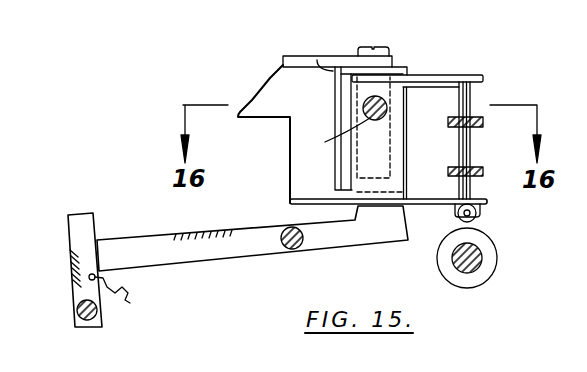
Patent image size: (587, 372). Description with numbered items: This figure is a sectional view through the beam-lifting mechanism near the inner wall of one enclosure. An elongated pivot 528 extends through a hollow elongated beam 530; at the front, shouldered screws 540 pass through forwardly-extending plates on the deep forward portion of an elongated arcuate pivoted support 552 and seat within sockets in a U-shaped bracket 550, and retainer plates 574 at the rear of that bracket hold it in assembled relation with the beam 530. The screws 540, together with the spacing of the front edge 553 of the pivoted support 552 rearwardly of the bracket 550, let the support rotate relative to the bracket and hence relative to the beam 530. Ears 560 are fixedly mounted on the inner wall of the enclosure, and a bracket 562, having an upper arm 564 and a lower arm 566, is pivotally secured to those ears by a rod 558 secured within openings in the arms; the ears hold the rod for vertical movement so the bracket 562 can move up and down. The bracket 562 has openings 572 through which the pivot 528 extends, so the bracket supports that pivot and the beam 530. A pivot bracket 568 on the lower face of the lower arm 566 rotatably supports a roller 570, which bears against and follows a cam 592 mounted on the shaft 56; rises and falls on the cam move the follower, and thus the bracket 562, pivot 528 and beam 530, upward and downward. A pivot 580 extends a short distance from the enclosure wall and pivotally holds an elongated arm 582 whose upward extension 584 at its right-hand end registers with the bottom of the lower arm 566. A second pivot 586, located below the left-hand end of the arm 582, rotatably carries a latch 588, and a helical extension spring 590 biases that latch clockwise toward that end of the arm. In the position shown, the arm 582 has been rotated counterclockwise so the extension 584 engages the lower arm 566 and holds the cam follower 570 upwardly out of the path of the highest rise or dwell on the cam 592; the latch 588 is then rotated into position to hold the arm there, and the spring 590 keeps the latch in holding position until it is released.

The shaft 56 is at (462, 272).
The elongated pivot 528 is at (387, 107).
The hollow elongated beam 530 is at (396, 150).
The shouldered screws 540 is at (375, 47).
The U-shaped bracket 550 is at (398, 68).
The pivoted support 552 is at (262, 83).
The front edge 553 is at (317, 60).
The rod 558 is at (465, 105).
The ears 560 is at (480, 127).
The bracket 562 is at (430, 172).
The upper arm 564 is at (455, 78).
The lower arm 566 is at (480, 196).
The pivot bracket 568 is at (481, 206).
The roller 570 is at (478, 219).
The openings 572 is at (325, 142).
The retainer plates 574 is at (345, 68).
The pivot 580 is at (294, 249).
The elongated arm 582 is at (238, 253).
The upward extension 584 is at (375, 212).
The pivot 586 is at (77, 313).
The latch 588 is at (75, 233).
The helical extension spring 590 is at (127, 302).
The cam 592 is at (481, 283).